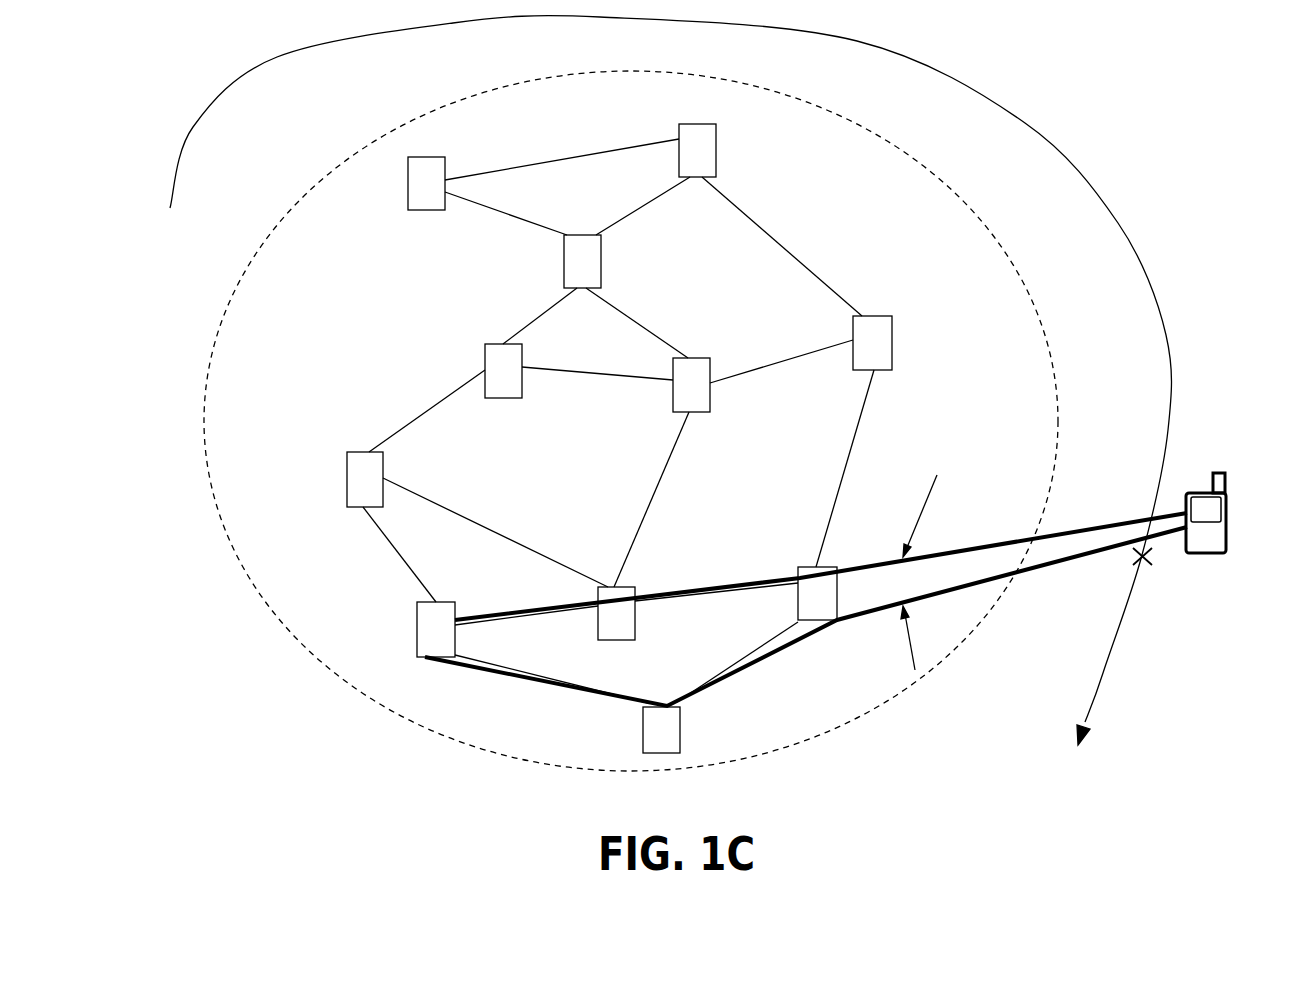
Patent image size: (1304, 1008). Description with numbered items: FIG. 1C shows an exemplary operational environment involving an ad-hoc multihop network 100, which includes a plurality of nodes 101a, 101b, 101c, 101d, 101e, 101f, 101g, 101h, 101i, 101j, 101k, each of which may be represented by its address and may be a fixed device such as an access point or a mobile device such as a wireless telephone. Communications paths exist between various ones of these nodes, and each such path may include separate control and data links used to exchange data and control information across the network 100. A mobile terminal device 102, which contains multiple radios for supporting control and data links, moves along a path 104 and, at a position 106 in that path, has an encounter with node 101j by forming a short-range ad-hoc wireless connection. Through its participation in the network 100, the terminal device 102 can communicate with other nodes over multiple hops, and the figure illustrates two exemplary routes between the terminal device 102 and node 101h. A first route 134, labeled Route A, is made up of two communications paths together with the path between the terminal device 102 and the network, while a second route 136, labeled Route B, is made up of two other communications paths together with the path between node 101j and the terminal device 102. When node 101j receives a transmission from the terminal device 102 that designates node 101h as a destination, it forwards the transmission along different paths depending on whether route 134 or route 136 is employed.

The ad-hoc multihop network 100 is at (210, 367).
The node 101a is at (448, 165).
The node 101b is at (717, 162).
The node 101c is at (603, 275).
The node 101d is at (383, 470).
The node 101e is at (523, 380).
The node 101f is at (712, 362).
The node 101g is at (883, 315).
The node 101h is at (457, 610).
The node 101i is at (627, 585).
The node 101j is at (827, 567).
The node 101k is at (682, 730).
The mobile terminal device 102 is at (1227, 508).
The path 104 is at (1103, 675).
The position 106 is at (1147, 562).
The route 134 is at (942, 555).
The route 136 is at (947, 592).